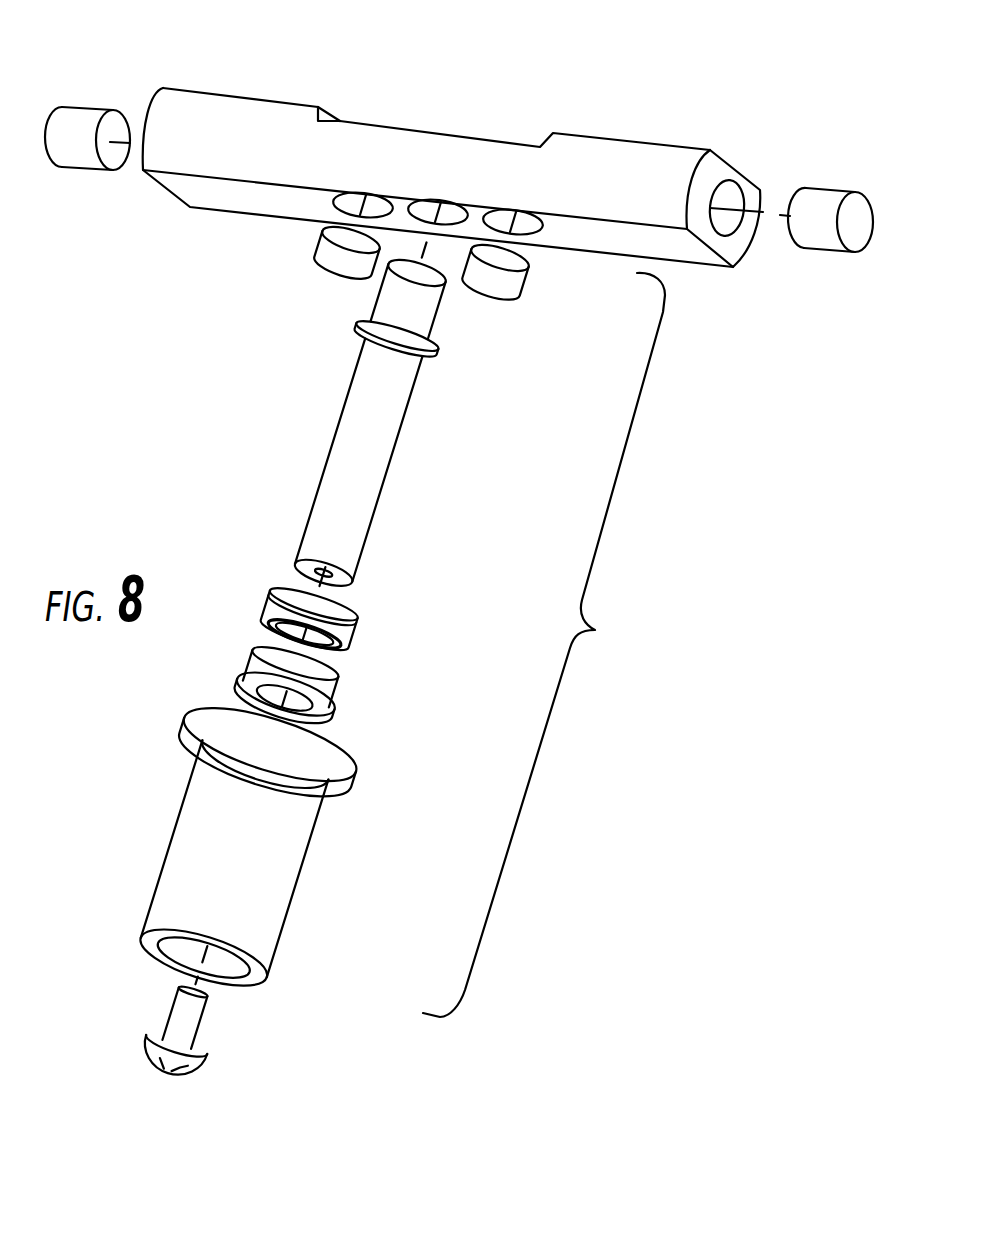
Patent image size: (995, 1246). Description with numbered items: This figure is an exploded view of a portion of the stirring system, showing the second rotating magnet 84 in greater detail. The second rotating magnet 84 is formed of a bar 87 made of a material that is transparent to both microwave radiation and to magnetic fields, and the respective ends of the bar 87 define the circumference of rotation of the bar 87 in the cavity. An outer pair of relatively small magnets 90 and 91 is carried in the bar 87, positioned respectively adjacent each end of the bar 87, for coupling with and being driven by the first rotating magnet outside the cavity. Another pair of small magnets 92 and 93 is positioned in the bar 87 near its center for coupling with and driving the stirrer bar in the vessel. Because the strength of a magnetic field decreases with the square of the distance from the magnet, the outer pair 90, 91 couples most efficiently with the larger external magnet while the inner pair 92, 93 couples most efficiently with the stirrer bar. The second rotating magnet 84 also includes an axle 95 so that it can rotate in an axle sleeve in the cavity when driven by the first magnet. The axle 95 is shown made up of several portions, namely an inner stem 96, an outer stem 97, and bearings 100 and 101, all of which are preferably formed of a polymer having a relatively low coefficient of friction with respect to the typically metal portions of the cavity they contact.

The second rotating magnet 84 is at (243, 446).
The bar 87 is at (635, 157).
The outer magnet 90 is at (87, 113).
The outer magnet 91 is at (830, 202).
The inner magnet 92 is at (346, 273).
The inner magnet 93 is at (497, 288).
The axle 95 is at (595, 630).
The inner stem 96 is at (367, 485).
The outer stem 97 is at (263, 888).
The bearing 100 is at (352, 651).
The bearing 101 is at (337, 680).